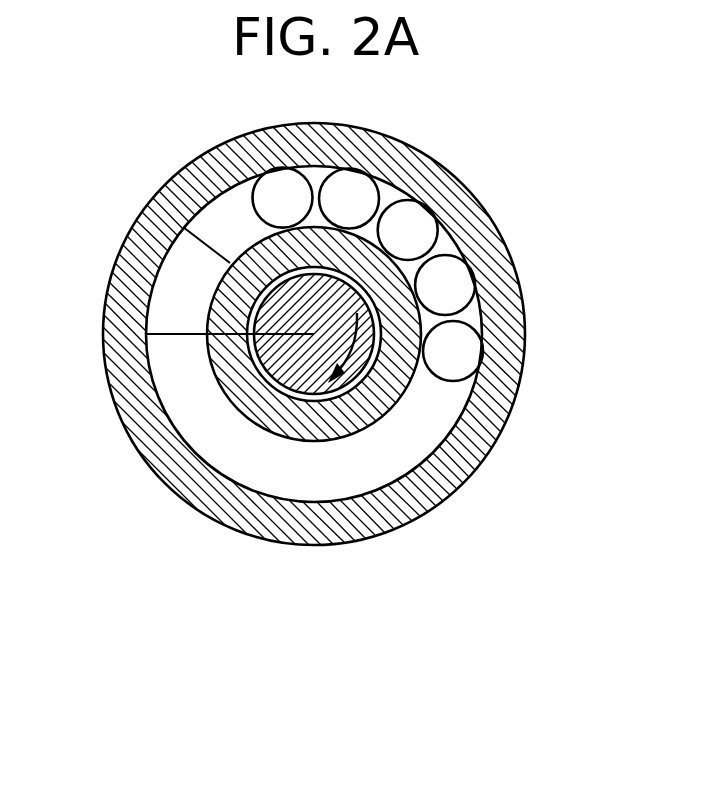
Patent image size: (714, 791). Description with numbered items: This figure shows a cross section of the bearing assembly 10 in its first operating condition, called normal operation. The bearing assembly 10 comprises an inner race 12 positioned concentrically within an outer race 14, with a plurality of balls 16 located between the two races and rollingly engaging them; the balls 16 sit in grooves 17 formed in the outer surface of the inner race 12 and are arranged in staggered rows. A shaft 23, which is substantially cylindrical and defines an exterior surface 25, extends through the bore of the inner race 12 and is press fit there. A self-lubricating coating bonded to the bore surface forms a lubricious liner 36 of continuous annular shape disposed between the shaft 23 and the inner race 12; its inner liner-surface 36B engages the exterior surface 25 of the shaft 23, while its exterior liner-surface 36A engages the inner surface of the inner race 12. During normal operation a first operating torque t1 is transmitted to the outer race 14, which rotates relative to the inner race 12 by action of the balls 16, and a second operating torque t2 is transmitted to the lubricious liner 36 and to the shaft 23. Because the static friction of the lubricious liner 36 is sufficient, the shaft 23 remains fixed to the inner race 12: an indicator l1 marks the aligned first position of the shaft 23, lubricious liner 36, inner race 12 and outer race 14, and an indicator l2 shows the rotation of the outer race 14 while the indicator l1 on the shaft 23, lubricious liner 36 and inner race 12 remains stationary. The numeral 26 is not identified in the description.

The bearing assembly 10 is at (187, 142).
The inner race 12 is at (397, 363).
The outer race 14 is at (503, 267).
The balls 16 is at (483, 320).
The grooves 17 is at (397, 393).
The shaft 23 is at (317, 395).
The exterior surface 25 is at (308, 365).
The groove 26 is at (210, 208).
The lubricious liner 36 is at (377, 410).
The exterior liner-surface 36A is at (263, 352).
The inner liner-surface 36B is at (293, 393).
The indicator l1 is at (147, 334).
The indicator l2 is at (188, 250).
The first operating torque t1 is at (466, 162).
The second operating torque t2 is at (470, 458).